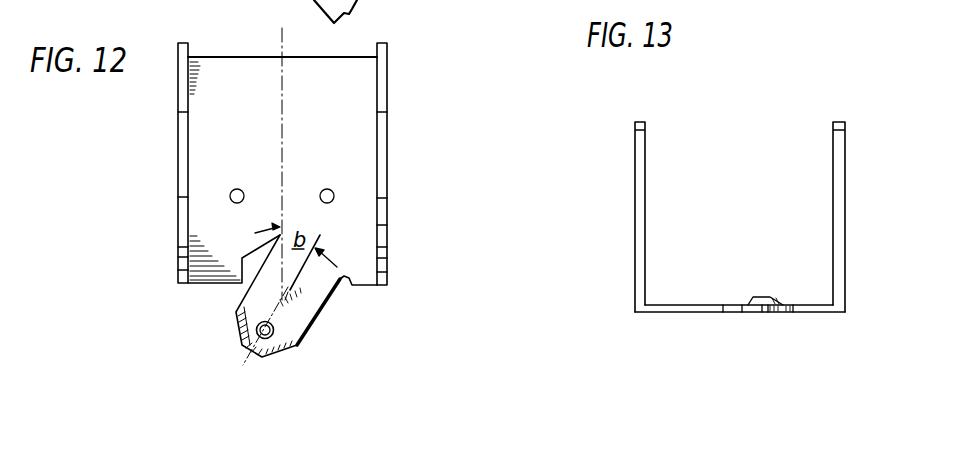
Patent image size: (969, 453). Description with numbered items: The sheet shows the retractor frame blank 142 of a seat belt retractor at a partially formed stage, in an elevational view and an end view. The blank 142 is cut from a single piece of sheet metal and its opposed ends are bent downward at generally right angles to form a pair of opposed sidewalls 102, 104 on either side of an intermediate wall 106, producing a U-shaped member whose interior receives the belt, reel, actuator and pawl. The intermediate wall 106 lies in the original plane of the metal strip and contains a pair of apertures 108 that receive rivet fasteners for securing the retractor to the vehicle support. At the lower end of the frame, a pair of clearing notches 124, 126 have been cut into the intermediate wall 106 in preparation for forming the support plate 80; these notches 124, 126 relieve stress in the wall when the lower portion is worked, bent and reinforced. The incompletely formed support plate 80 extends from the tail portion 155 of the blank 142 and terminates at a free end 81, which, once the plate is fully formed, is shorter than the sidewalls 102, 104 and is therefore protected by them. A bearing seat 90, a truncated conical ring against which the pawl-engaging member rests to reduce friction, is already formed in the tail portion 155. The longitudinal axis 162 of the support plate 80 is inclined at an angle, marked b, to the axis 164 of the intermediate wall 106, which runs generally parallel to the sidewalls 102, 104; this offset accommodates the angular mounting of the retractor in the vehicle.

In FIG. 12, the support plate 80 is at (310, 302).
In FIG. 13, the support plate 80 is at (786, 314).
In FIG. 12, the free end of the support plate 81 is at (249, 353).
In FIG. 13, the free end of the support plate 81 is at (760, 314).
In FIG. 13, the bearing seat 90 is at (773, 298).
In FIG. 12, the sidewall 102 is at (384, 143).
In FIG. 13, the sidewall 102 is at (835, 163).
In FIG. 13, the sidewall 104 is at (645, 162).
In FIG. 12, the intermediate wall 106 is at (355, 78).
In FIG. 13, the intermediate wall 106 is at (695, 314).
In FIG. 12, the apertures 108 is at (253, 168).
In FIG. 12, the notch 124 is at (347, 278).
In FIG. 12, the notch 126 is at (255, 258).
In FIG. 12, the retractor frame blank 142 is at (365, 185).
In FIG. 13, the retractor frame blank 142 is at (662, 75).
In FIG. 13, the tail portion 155 is at (727, 304).
In FIG. 12, the longitudinal axis of the support plate 162 is at (318, 237).
In FIG. 12, the axis of the intermediate wall 164 is at (283, 133).